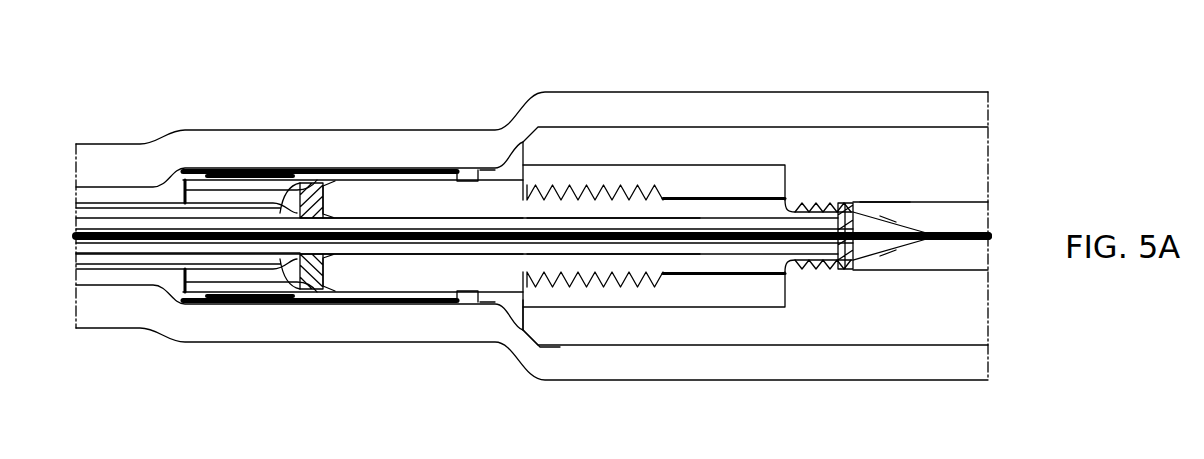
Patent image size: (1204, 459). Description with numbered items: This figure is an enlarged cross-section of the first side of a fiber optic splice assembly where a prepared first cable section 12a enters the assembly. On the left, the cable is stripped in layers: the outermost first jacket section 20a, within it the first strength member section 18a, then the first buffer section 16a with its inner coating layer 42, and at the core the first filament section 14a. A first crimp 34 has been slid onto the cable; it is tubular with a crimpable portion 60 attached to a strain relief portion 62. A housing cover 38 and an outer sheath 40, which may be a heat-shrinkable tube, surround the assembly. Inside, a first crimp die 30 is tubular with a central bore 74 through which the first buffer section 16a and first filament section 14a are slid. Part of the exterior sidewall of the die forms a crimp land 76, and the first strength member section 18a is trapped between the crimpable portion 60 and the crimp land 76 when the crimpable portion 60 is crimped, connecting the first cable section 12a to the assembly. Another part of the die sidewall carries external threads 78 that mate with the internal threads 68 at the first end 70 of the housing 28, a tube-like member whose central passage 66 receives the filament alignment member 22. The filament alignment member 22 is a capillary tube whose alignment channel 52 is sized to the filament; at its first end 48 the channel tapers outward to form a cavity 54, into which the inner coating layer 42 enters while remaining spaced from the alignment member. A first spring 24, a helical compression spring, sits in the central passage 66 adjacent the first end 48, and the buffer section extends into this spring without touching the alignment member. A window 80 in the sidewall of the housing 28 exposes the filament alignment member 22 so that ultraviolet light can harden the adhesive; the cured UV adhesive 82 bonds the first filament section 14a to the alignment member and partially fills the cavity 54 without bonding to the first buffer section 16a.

The first cable section 12a is at (95, 222).
The first jacket section 20a is at (115, 207).
The strain relief portion 62 is at (142, 193).
The first strength member section 18a is at (165, 208).
The first crimp 34 is at (203, 177).
The outer sheath 40 is at (280, 140).
The crimpable portion 60 is at (362, 173).
The crimp land 76 is at (397, 202).
The first crimp die 30 is at (503, 183).
The external threads 78 is at (563, 205).
The internal threads 68 is at (605, 178).
The housing cover 38 is at (702, 140).
The housing 28 is at (752, 185).
The first buffer section 16a is at (812, 205).
The first spring 24 is at (828, 203).
The inner coating layer 42 is at (865, 228).
The filament alignment member 22 is at (925, 208).
The first filament section 14a is at (970, 228).
The window 80 is at (875, 193).
The central bore 74 is at (367, 253).
The first end 70 is at (523, 303).
The first end 48 is at (855, 267).
The cavity 54 is at (878, 245).
The cured UV adhesive 82 is at (900, 245).
The central passage 66 is at (933, 270).
The alignment channel 52 is at (958, 238).